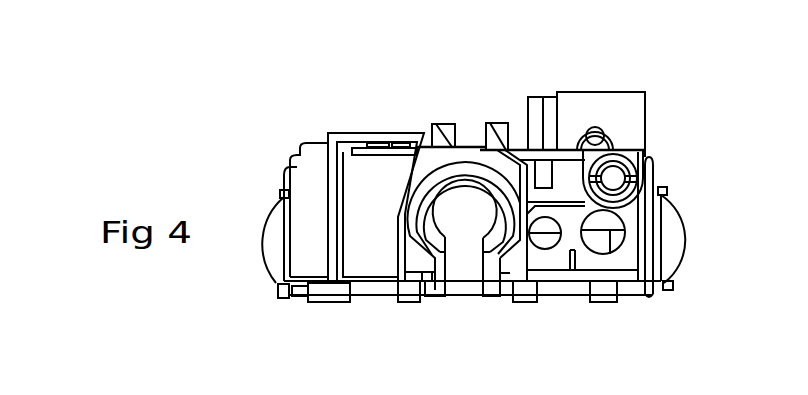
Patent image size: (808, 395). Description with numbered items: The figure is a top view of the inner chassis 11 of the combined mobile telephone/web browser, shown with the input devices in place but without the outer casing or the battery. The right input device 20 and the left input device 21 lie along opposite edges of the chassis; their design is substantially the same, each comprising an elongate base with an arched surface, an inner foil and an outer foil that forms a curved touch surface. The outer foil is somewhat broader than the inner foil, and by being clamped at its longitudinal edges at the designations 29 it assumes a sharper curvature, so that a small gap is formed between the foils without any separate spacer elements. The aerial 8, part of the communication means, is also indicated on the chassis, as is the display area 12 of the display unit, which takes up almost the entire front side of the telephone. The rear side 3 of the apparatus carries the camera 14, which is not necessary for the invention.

The inner chassis 11 is at (472, 210).
The rear side 3 is at (363, 133).
The camera 14 is at (615, 90).
The aerial 8 is at (643, 162).
The right input device 20 is at (272, 214).
The left input device 21 is at (682, 223).
The display area 12 is at (560, 297).
The clamping designations 29 is at (280, 191).